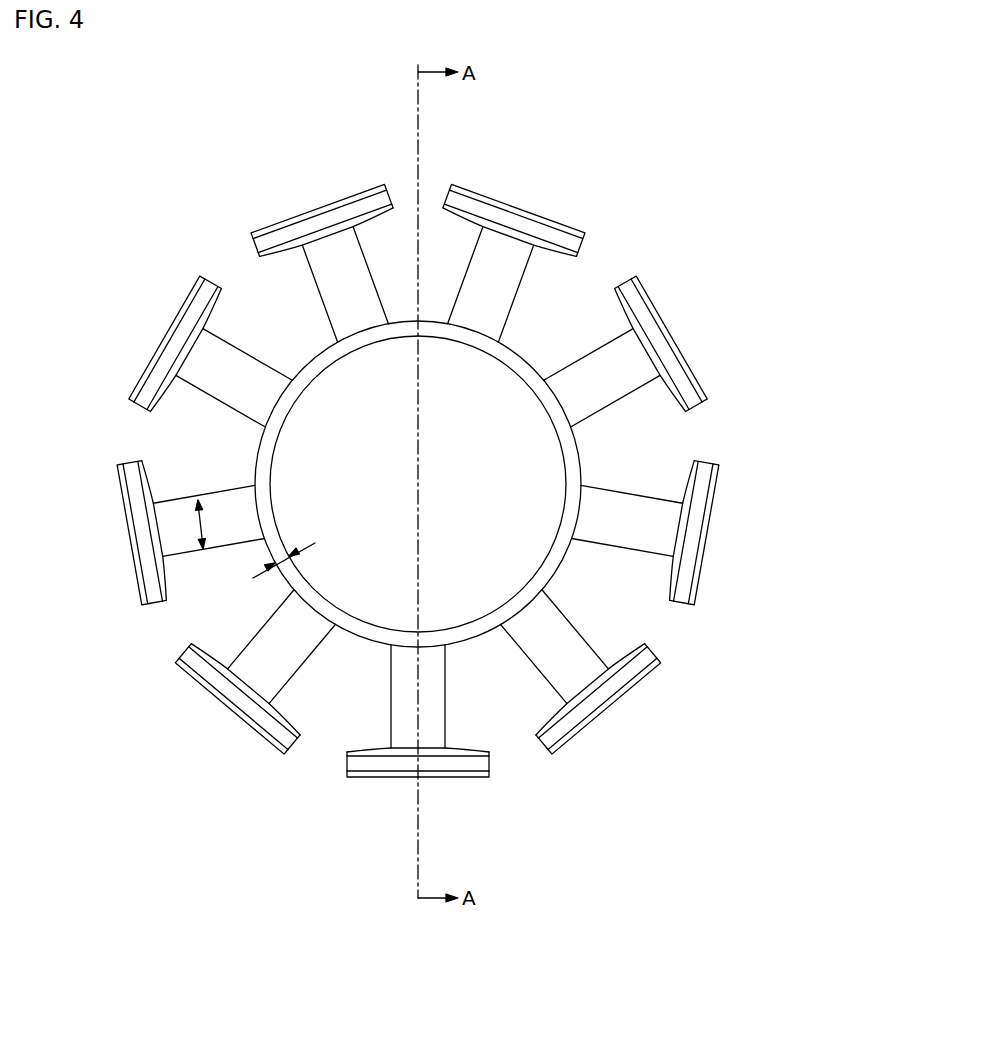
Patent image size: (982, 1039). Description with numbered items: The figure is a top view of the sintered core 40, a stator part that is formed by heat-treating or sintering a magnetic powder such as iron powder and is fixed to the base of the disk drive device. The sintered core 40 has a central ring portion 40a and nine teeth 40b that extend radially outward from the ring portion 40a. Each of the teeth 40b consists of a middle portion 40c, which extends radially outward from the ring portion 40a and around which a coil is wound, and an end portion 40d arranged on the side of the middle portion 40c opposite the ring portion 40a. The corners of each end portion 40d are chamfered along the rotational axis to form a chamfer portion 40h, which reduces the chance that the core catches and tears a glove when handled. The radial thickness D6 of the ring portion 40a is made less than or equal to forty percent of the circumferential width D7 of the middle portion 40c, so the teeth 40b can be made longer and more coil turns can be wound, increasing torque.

The sintered core 40 is at (436, 1026).
The ring portion 40a is at (468, 633).
The teeth 40b is at (307, 155).
The middle portion 40c is at (322, 250).
The end portion 40d is at (280, 235).
The chamfer portion 40h is at (377, 210).
The thickness of the ring portion D6 is at (283, 550).
The width of the middle portion D7 is at (196, 520).